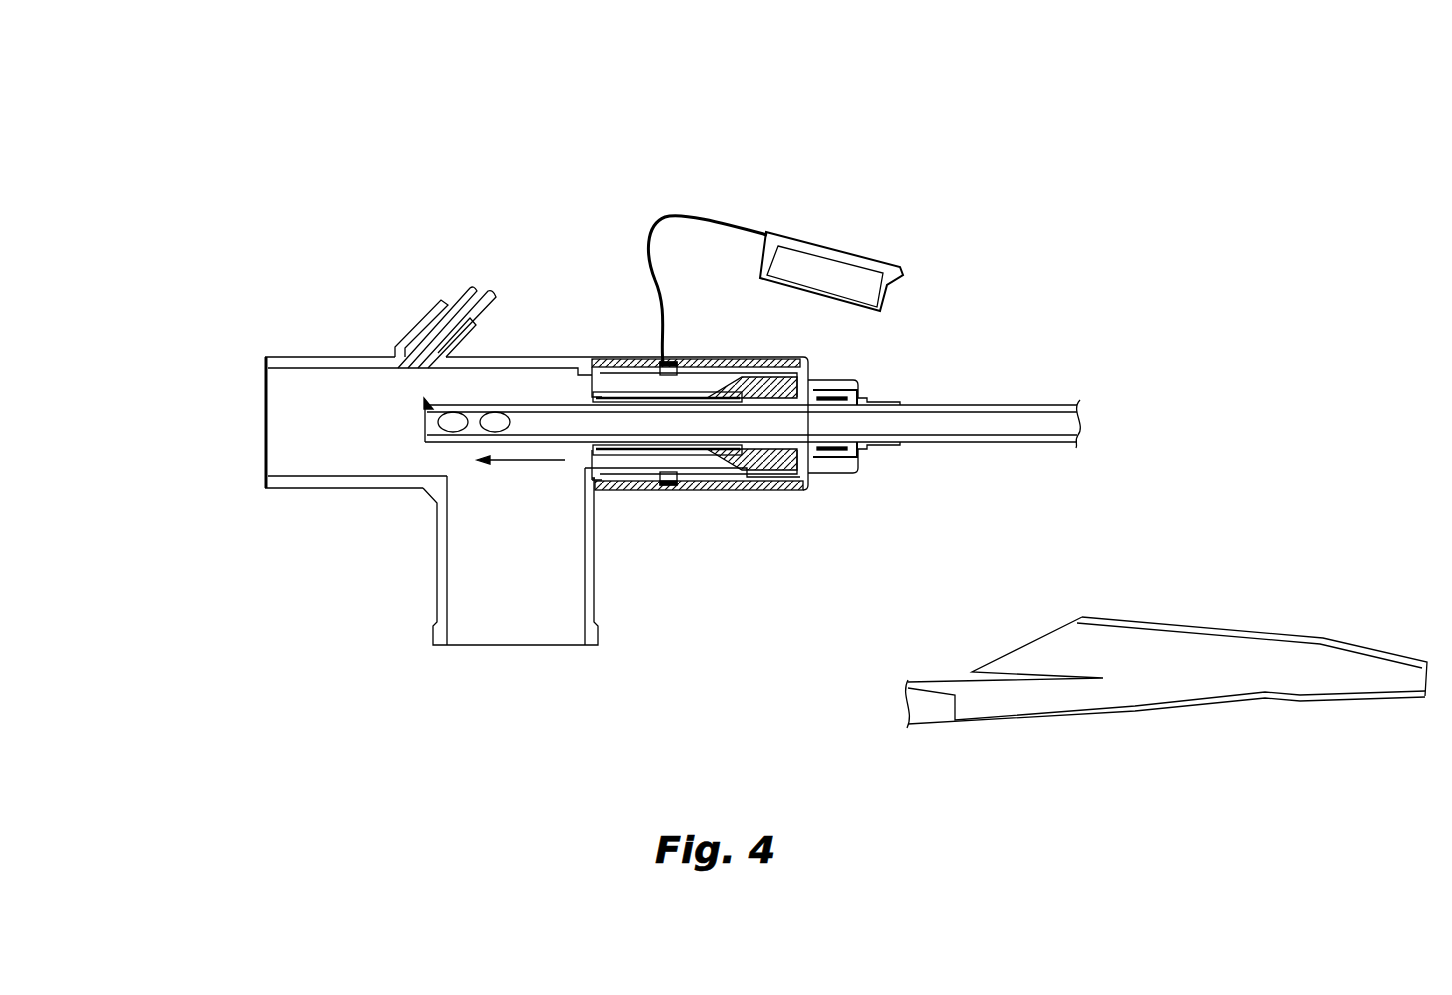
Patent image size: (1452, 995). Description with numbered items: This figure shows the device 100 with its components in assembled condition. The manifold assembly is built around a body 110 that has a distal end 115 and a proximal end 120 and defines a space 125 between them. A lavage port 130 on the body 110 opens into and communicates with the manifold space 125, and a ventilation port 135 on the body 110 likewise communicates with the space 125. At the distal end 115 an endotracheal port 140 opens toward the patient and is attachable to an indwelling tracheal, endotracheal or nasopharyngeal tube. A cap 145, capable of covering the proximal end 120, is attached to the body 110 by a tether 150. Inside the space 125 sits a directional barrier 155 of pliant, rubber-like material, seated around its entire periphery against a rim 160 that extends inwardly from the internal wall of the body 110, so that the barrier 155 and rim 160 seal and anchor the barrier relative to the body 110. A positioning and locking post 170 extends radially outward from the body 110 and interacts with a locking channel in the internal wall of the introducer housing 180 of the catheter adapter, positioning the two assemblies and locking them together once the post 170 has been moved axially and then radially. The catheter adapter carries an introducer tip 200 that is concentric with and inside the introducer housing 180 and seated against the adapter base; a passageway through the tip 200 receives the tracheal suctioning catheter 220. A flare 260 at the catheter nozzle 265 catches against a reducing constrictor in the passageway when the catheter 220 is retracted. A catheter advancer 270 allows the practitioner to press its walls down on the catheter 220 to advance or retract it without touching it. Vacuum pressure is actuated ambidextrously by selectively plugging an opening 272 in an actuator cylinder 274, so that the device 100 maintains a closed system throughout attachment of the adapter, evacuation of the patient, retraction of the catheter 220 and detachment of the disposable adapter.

The device 100 is at (624, 150).
The body 110 is at (318, 357).
The distal end 115 is at (262, 357).
The proximal end 120 is at (813, 360).
The space 125 is at (378, 392).
The lavage port 130 is at (478, 291).
The ventilation port 135 is at (487, 567).
The endotracheal port 140 is at (290, 422).
The cap 145 is at (855, 244).
The tether 150 is at (733, 223).
The directional barrier 155 is at (655, 458).
The rim 160 is at (760, 465).
The positioning and locking post 170 is at (663, 360).
The introducer housing 180 is at (612, 493).
The introducer tip 200 is at (608, 398).
The tracheal suctioning catheter 220 is at (1040, 405).
The flare 260 is at (425, 440).
The catheter nozzle 265 is at (422, 415).
The catheter advancer 270 is at (877, 390).
The opening 272 is at (1045, 633).
The actuator cylinder 274 is at (1138, 715).